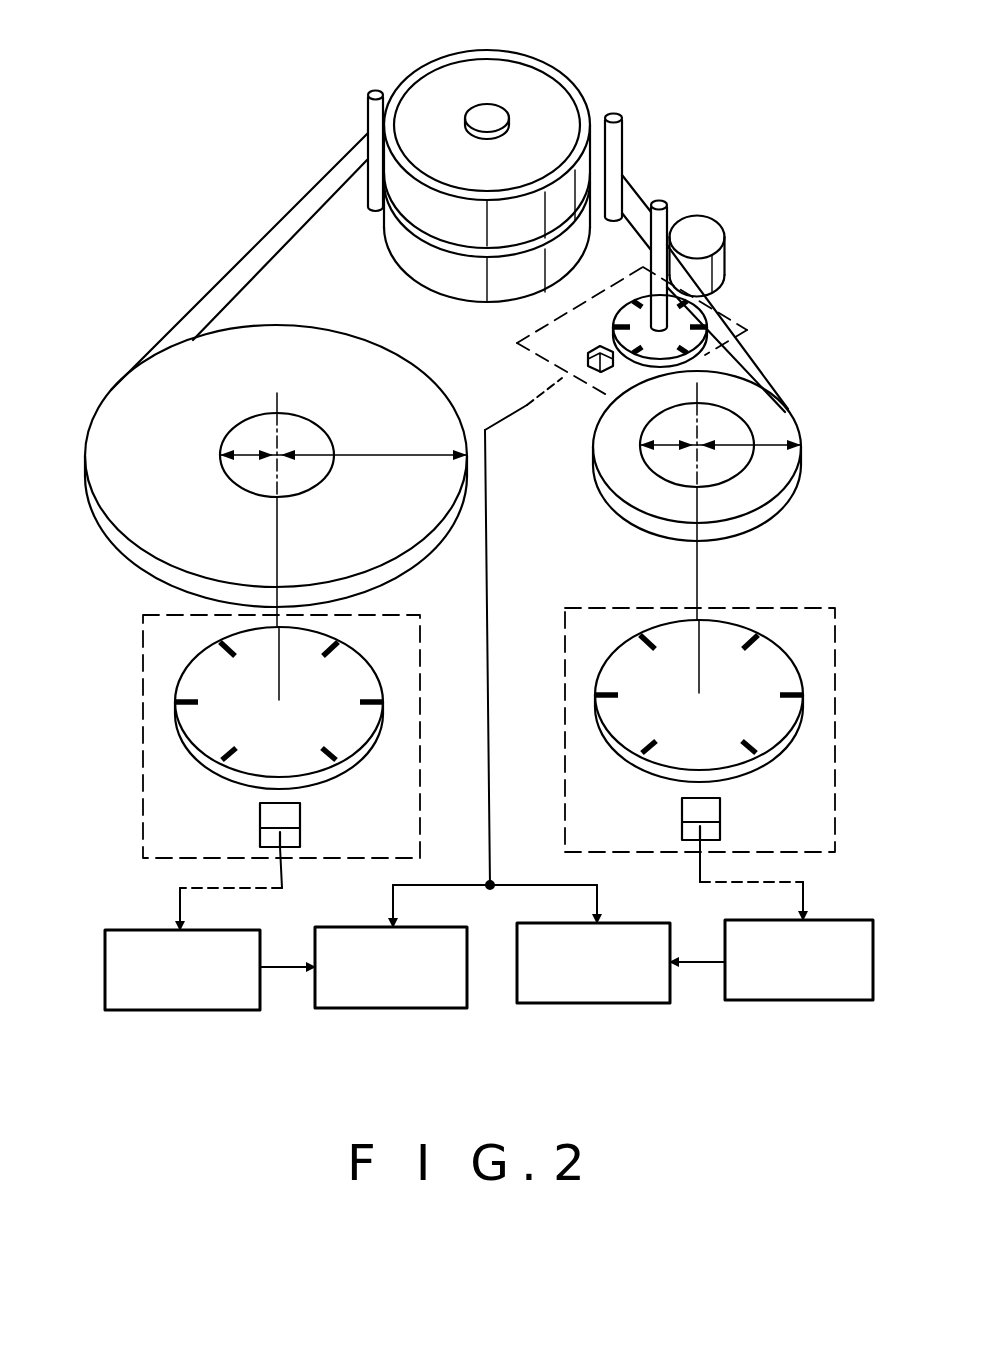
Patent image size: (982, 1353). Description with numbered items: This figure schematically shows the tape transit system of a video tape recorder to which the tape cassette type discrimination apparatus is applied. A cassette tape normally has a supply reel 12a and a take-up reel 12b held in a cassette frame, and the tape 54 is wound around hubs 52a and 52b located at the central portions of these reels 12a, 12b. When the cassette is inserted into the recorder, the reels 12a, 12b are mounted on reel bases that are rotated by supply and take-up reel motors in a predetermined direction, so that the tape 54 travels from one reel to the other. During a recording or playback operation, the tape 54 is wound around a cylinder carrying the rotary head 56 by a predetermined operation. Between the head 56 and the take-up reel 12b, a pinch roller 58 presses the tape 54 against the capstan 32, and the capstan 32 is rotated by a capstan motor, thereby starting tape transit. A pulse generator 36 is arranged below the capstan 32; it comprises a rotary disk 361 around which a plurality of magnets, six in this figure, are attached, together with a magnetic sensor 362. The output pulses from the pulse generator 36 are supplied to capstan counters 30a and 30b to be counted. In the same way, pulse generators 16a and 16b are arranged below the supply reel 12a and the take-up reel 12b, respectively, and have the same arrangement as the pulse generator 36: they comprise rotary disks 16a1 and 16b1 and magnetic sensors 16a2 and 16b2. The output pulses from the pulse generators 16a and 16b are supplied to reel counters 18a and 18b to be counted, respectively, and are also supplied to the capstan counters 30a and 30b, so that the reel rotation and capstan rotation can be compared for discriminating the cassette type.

The supply reel 12a is at (270, 446).
The take-up reel 12b is at (724, 452).
The pulse generator 16a is at (233, 736).
The rotary disk 16a1 is at (182, 732).
The magnetic sensor 16a2 is at (260, 818).
The pulse generator 16b is at (739, 730).
The rotary disk 16b1 is at (803, 676).
The magnetic sensor 16b2 is at (720, 820).
The reel counter 18a is at (188, 1010).
The reel counter 18b is at (800, 1000).
The capstan counter 30a is at (390, 1008).
The capstan counter 30b is at (593, 1003).
The capstan 32 is at (659, 201).
The pulse generator 36 is at (601, 359).
The rotary disk 361 is at (612, 323).
The magnetic sensor 362 is at (597, 373).
The hub 52a is at (315, 425).
The hub 52b is at (730, 465).
The tape 54 is at (278, 222).
The rotary head 56 is at (545, 62).
The pinch roller 58 is at (714, 236).